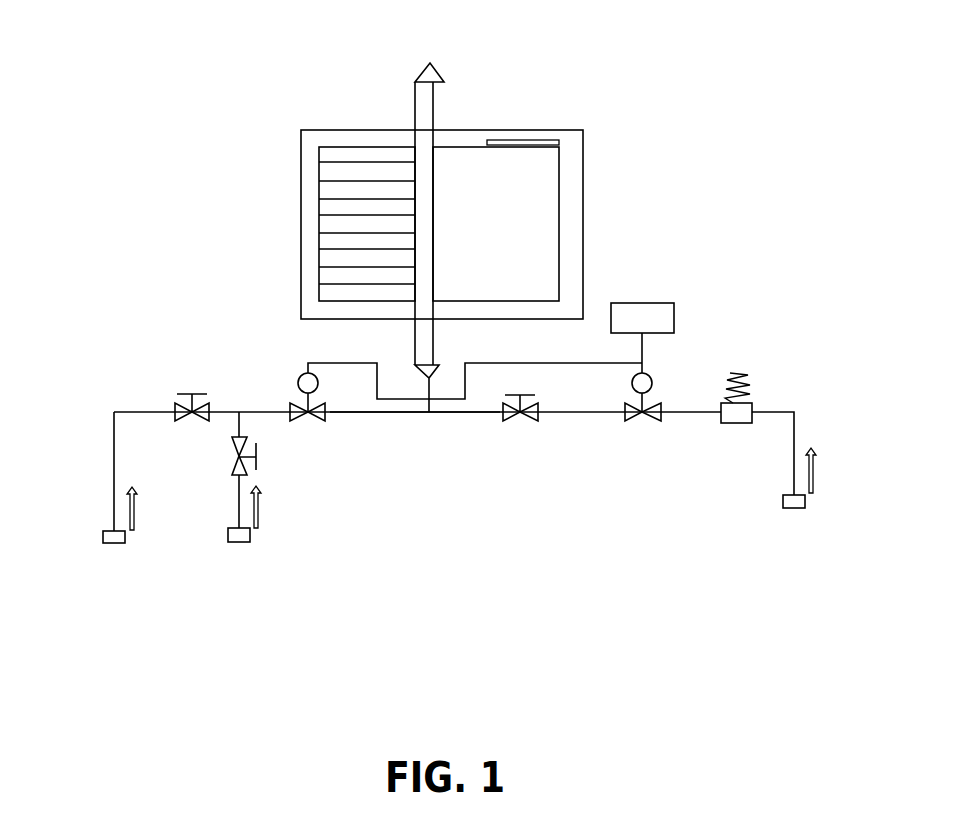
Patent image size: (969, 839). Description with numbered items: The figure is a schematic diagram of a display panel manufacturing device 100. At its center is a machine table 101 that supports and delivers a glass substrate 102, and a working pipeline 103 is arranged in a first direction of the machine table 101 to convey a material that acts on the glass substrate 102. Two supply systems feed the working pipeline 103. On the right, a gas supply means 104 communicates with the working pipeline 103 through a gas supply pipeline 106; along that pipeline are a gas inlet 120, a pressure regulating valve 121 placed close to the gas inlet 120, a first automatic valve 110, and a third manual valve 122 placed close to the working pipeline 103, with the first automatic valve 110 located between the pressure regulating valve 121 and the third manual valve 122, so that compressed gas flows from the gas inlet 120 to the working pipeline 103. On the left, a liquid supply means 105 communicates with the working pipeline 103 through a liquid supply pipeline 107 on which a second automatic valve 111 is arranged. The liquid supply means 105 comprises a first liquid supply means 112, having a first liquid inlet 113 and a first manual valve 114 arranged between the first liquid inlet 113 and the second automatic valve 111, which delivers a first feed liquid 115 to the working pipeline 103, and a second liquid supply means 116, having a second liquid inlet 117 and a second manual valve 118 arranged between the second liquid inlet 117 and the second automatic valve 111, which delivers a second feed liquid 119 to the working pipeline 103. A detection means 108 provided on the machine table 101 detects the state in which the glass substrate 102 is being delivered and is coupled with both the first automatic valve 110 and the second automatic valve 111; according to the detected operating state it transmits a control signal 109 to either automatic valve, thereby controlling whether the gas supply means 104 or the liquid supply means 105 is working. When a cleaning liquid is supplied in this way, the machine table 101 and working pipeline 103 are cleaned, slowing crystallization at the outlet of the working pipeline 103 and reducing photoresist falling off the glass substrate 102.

The display panel manufacturing device 100 is at (343, 78).
The machine table 101 is at (315, 152).
The glass substrate 102 is at (538, 160).
The working pipeline 103 is at (433, 97).
The gas supply means 104 is at (782, 415).
The liquid supply means 105 is at (128, 350).
The gas supply pipeline 106 is at (583, 415).
The liquid supply pipeline 107 is at (347, 417).
The detection means 108 is at (653, 312).
The control signal 109 is at (570, 358).
The first automatic valve 110 is at (643, 422).
The second automatic valve 111 is at (299, 398).
The first liquid supply means 112 is at (114, 470).
The first liquid inlet 113 is at (135, 533).
The first manual valve 114 is at (192, 395).
The first feed liquid 115 is at (122, 543).
The second liquid supply means 116 is at (232, 452).
The second liquid inlet 117 is at (253, 533).
The second manual valve 118 is at (253, 462).
The second feed liquid 119 is at (250, 543).
The gas inlet 120 is at (803, 508).
The pressure regulating valve 121 is at (735, 425).
The third manual valve 122 is at (525, 422).